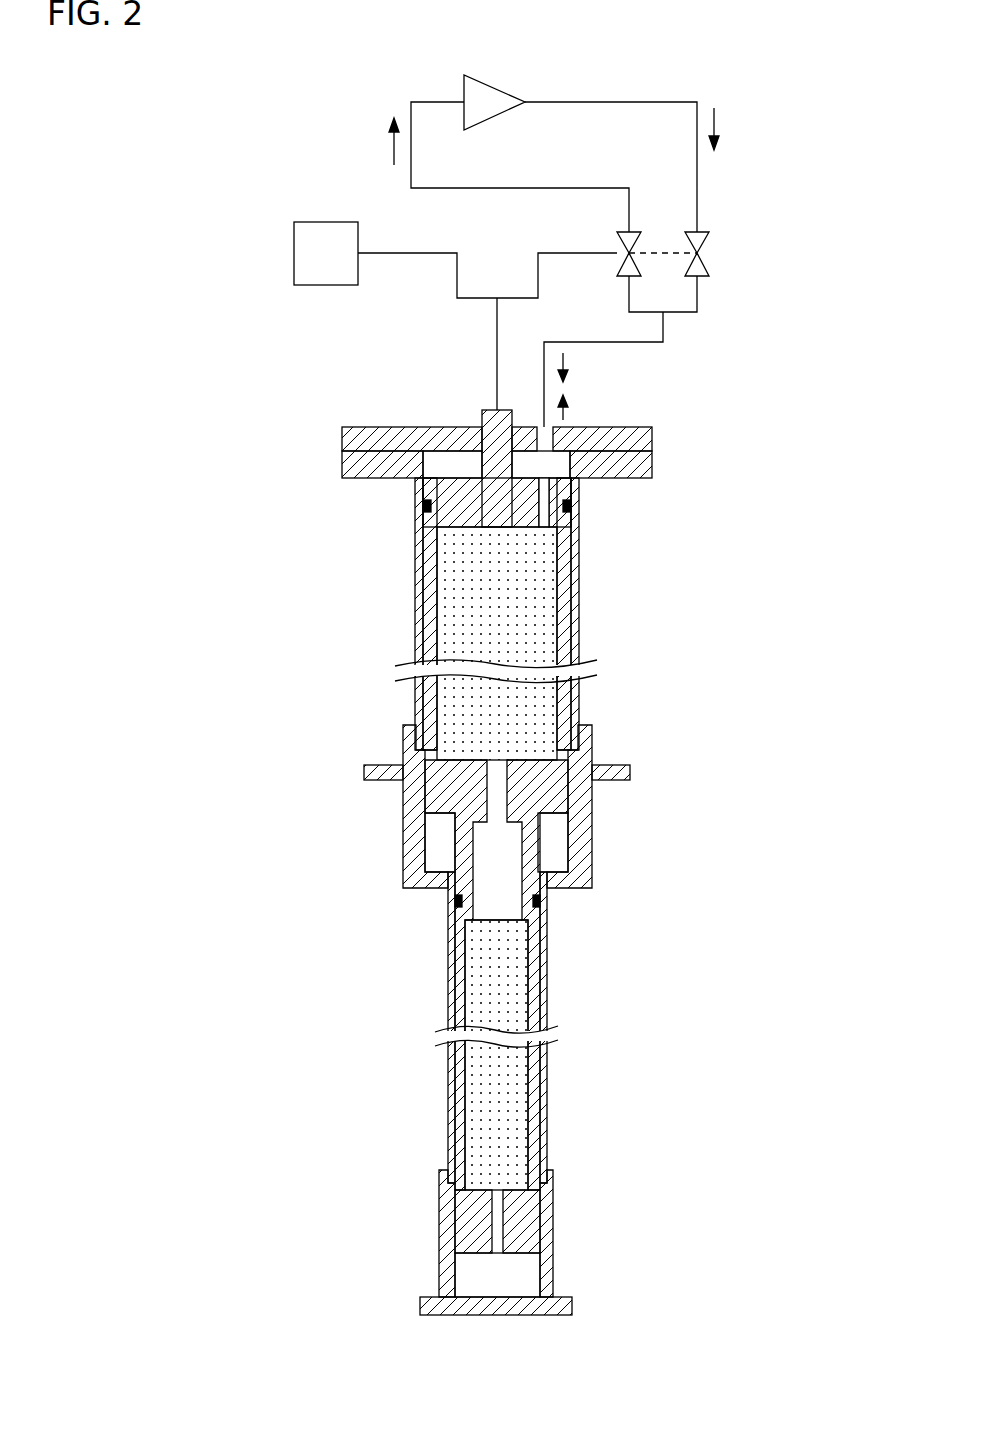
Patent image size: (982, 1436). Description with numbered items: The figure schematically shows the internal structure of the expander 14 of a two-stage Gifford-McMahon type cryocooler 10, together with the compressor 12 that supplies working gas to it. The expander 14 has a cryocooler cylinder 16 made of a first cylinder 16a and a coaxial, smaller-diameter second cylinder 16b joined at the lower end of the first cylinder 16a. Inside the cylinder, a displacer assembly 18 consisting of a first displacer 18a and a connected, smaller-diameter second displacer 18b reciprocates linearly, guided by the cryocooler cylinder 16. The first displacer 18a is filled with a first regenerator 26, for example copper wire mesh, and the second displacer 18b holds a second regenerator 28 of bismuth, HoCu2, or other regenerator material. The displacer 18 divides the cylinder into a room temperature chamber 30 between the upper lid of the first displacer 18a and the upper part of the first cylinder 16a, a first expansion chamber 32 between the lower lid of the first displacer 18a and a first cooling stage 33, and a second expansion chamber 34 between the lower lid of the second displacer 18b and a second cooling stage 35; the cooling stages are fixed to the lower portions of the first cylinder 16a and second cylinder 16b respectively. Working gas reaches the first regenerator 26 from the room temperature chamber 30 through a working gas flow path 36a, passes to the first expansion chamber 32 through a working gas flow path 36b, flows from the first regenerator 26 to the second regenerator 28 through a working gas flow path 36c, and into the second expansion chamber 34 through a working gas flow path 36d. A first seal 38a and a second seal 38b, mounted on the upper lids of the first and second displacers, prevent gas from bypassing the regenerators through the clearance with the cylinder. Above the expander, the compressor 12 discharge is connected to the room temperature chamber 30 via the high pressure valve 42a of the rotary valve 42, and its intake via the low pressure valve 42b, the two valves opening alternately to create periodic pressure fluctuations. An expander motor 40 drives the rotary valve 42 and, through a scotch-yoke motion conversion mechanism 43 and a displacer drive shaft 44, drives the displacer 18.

The cryocooler 10 is at (515, 1369).
The compressor 12 is at (493, 87).
The expander 14 is at (328, 400).
The cryocooler cylinder 16 is at (452, 771).
The first cylinder 16a is at (415, 583).
The second cylinder 16b is at (452, 1110).
The displacer assembly 18 is at (498, 806).
The first displacer 18a is at (565, 588).
The second displacer 18b is at (533, 952).
The first regenerator 26 is at (525, 625).
The second regenerator 28 is at (503, 982).
The room temperature chamber 30 is at (543, 470).
The first expansion chamber 32 is at (553, 847).
The first cooling stage 33 is at (592, 737).
The second expansion chamber 34 is at (528, 1277).
The second cooling stage 35 is at (548, 1210).
The working gas flow path 36a is at (544, 519).
The working gas flow path 36b is at (563, 757).
The working gas flow path 36c is at (497, 767).
The working gas flow path 36d is at (497, 1222).
The first seal 38a is at (423, 505).
The second seal 38b is at (455, 898).
The expander motor 40 is at (327, 222).
The rotary valve 42 is at (686, 200).
The high pressure valve 42a is at (720, 229).
The low pressure valve 42b is at (633, 232).
The motion conversion mechanism 43 is at (476, 298).
The displacer drive shaft 44 is at (503, 462).